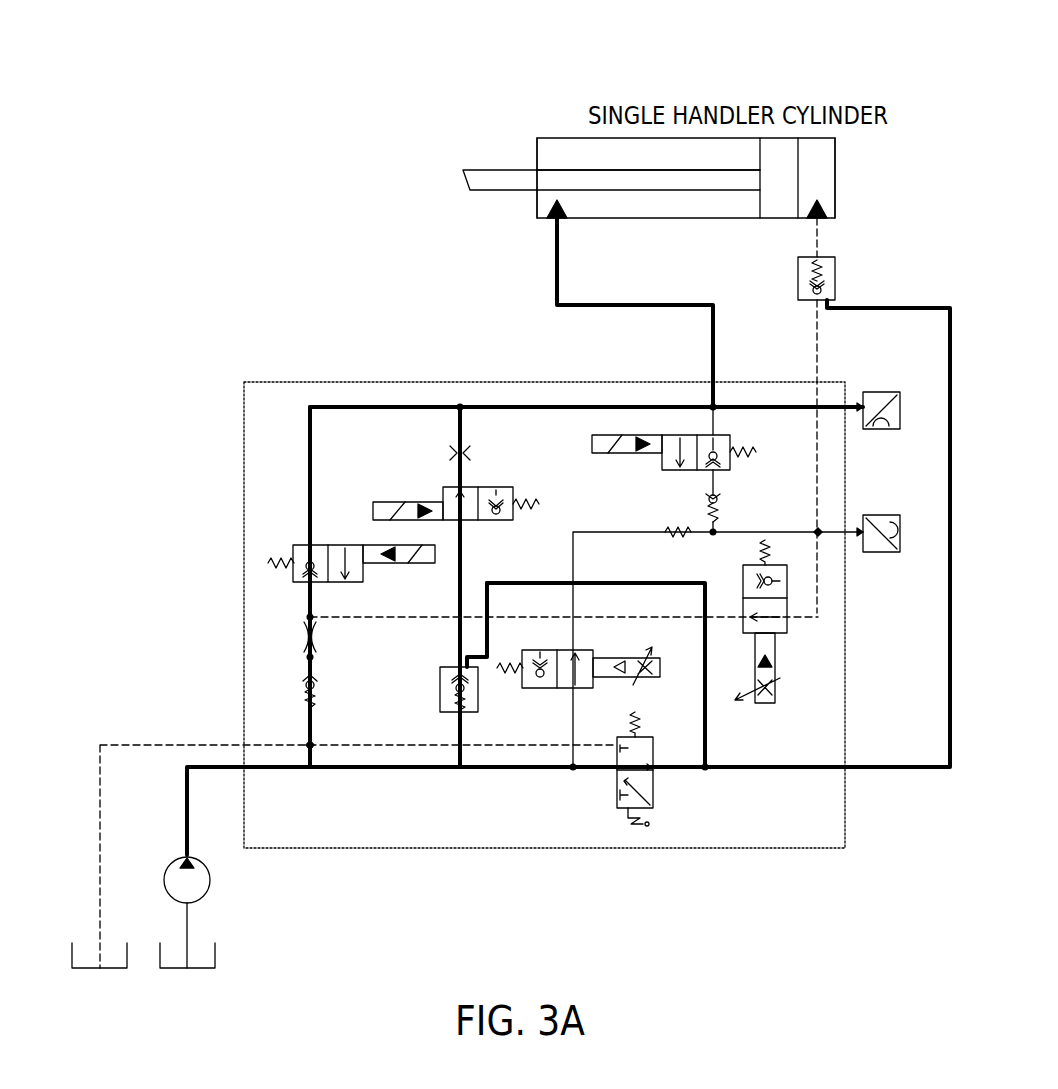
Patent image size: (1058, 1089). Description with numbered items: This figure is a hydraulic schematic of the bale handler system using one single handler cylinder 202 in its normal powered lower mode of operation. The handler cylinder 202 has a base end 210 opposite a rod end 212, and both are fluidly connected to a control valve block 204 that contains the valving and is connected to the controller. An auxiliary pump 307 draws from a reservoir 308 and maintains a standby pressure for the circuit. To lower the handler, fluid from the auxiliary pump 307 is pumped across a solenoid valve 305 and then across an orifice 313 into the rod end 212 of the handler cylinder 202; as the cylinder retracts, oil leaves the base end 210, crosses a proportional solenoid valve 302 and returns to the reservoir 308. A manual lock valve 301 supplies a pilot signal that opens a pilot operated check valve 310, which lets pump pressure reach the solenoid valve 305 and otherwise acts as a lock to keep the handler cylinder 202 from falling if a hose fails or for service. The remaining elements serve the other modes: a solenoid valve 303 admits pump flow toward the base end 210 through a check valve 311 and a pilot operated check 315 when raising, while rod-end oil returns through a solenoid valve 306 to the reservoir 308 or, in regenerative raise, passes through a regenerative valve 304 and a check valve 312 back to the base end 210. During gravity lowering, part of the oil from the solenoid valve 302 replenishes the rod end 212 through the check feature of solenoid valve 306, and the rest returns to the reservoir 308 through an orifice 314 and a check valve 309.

The handler cylinder 202 is at (663, 138).
The rod end 212 is at (547, 147).
The base end 210 is at (825, 178).
The control valve block 204 is at (327, 376).
The pilot operated check 315 is at (837, 280).
The orifice 313 is at (470, 455).
The solenoid valve 305 is at (395, 502).
The solenoid valve 306 is at (300, 545).
The regenerative valve 304 is at (598, 455).
The check valve 312 is at (722, 500).
The check valve 311 is at (663, 535).
The solenoid valve 302 is at (788, 588).
The orifice 314 is at (303, 633).
The check valve 309 is at (305, 712).
The pilot operated check valve 310 is at (440, 697).
The solenoid valve 303 is at (552, 645).
The manual lock valve 301 is at (650, 800).
The auxiliary pump 307 is at (210, 880).
The reservoir 308 is at (84, 932).